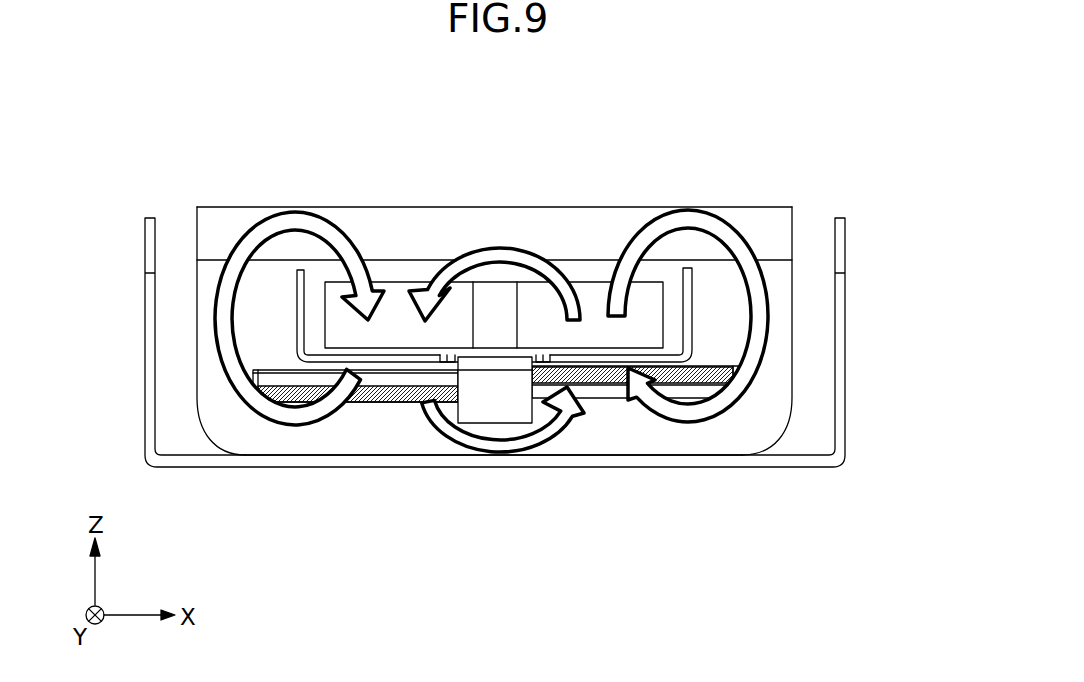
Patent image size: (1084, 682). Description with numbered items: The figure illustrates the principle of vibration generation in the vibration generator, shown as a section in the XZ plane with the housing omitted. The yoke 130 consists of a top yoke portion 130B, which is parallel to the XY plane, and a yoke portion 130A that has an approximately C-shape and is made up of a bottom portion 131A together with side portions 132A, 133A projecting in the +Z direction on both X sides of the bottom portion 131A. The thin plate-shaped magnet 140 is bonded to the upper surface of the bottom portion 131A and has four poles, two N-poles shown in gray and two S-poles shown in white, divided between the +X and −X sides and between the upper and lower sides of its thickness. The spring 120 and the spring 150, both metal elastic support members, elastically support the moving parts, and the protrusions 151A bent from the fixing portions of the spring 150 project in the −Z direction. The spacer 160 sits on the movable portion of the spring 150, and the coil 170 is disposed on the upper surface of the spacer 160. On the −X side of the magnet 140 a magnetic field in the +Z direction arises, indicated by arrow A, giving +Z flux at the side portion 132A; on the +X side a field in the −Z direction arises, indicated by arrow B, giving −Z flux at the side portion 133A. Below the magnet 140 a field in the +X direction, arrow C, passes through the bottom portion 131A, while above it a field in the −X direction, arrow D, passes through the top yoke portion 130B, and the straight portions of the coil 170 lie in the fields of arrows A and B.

The spring 120 is at (846, 290).
The yoke 130 is at (523, 254).
The yoke portion 130A is at (783, 282).
The top yoke portion 130B is at (738, 222).
The bottom portion 131A is at (385, 430).
The side portion 132A is at (222, 392).
The side portion 133A is at (772, 378).
The magnet 140 is at (600, 400).
The spring 150 is at (692, 311).
The protrusion 151A is at (505, 400).
The spacer 160 is at (300, 352).
The coil 170 is at (590, 297).
The arrow A is at (293, 210).
The arrow B is at (683, 210).
The arrow C is at (443, 440).
The arrow D is at (493, 248).